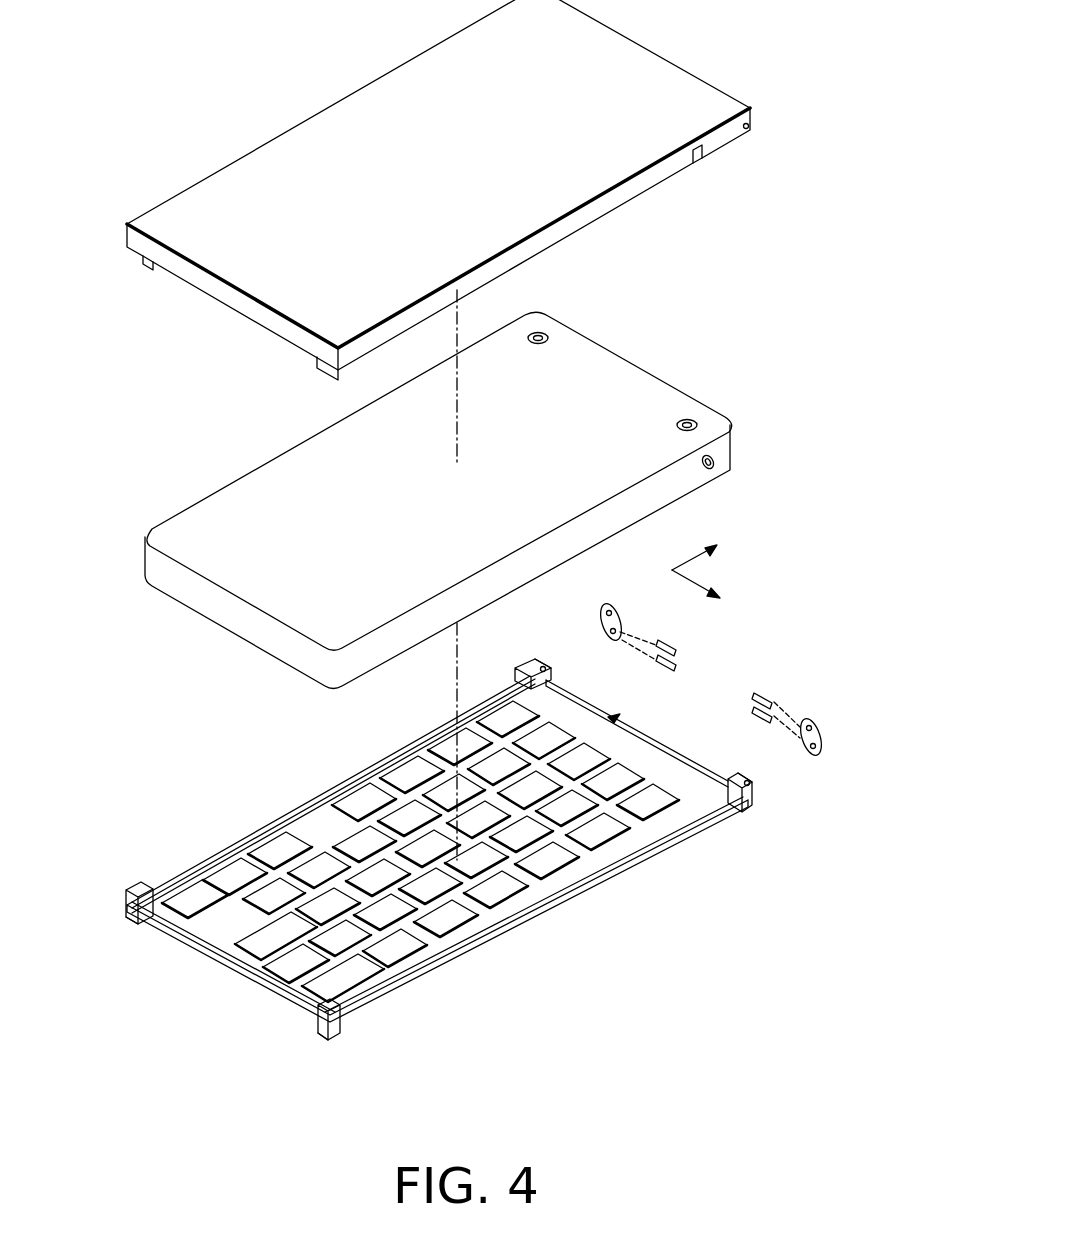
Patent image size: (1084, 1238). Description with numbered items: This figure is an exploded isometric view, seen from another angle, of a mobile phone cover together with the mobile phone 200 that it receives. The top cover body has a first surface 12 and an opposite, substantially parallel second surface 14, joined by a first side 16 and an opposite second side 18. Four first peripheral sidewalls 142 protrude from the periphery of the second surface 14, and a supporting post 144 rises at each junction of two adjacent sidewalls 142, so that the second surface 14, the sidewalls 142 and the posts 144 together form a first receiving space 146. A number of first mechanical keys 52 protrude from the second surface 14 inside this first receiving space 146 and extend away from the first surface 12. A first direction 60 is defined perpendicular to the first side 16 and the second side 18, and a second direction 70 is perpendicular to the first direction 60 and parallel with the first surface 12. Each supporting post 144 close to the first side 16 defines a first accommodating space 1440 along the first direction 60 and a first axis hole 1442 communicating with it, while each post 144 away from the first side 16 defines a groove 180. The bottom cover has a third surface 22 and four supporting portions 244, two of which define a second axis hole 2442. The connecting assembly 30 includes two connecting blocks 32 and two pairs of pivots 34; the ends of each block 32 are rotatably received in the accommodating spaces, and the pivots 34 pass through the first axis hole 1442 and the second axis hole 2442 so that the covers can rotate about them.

The third surface 22 is at (310, 138).
The supporting portion 244 is at (705, 148).
The second axis hole 2442 is at (760, 130).
The mobile phone 200 is at (613, 373).
The first direction 60 is at (711, 546).
The second direction 70 is at (713, 596).
The connecting assembly 30 is at (723, 679).
The connecting block 32 is at (814, 726).
The pivot 34 is at (710, 685).
The second surface 14 is at (453, 849).
The first surface 12 is at (452, 980).
The second side 18 is at (270, 1000).
The first peripheral sidewall 142 is at (300, 822).
The first side 16 is at (690, 757).
The first receiving space 146 is at (616, 720).
The supporting post 144 is at (146, 884).
The groove 180 is at (128, 893).
The first accommodating space 1440 is at (537, 663).
The first axis hole 1442 is at (553, 672).
The first mechanical key 52 is at (612, 872).